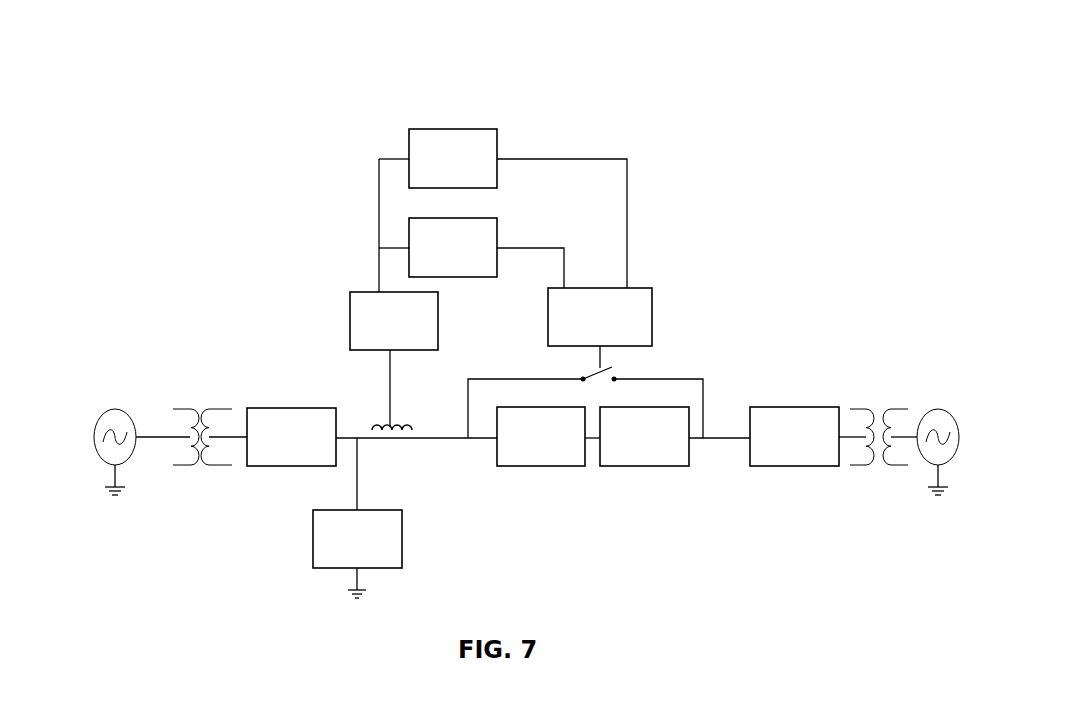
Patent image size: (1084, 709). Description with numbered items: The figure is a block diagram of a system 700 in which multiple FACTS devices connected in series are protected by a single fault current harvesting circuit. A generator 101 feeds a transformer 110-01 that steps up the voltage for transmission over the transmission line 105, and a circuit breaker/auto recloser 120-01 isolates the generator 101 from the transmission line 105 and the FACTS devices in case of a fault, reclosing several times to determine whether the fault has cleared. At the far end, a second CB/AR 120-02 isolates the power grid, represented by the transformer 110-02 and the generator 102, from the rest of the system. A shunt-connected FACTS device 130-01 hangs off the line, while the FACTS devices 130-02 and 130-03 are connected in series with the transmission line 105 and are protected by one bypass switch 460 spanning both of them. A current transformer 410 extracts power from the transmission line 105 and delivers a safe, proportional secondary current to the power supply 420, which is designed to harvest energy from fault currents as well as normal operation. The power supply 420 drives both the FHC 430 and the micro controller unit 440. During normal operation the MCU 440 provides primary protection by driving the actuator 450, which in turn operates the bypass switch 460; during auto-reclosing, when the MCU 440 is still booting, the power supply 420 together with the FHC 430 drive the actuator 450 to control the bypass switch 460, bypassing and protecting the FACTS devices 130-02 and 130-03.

The system 700 is at (532, 45).
The generator 101 is at (113, 405).
The generator 102 is at (958, 407).
The transmission line 105 is at (717, 440).
The transformer 110-01 is at (192, 400).
The transformer 110-02 is at (885, 400).
The circuit breaker/auto recloser 120-01 is at (248, 407).
The second circuit breaker/auto recloser 120-02 is at (807, 407).
The FACTS device 130-01 is at (315, 572).
The FACTS device 130-02 is at (542, 466).
The FACTS device 130-03 is at (645, 466).
The current transformer 410 is at (380, 410).
The power supply 420 is at (352, 292).
The fault current harvesting circuit 430 is at (505, 232).
The micro controller unit 440 is at (505, 143).
The actuator 450 is at (652, 283).
The bypass switch 460 is at (627, 367).